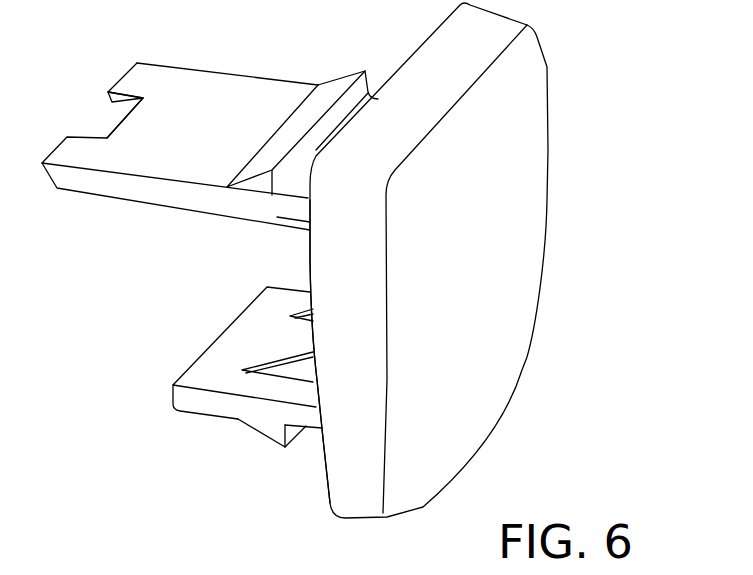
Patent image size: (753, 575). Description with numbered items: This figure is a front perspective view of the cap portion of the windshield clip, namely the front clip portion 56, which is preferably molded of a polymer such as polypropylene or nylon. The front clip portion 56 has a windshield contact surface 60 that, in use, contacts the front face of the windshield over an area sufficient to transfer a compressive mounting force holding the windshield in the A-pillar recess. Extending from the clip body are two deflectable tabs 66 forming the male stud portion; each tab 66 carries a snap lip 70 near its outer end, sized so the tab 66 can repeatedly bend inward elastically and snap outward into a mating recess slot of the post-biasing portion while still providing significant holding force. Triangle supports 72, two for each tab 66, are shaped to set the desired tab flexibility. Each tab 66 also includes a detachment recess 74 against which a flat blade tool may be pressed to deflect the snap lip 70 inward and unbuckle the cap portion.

The front clip portion 56 is at (587, 54).
The windshield contact surface 60 is at (307, 242).
The deflectable tab 66 is at (202, 93).
The snap lip 70 is at (323, 100).
The triangle support 72 is at (287, 367).
The detachment recess 74 is at (108, 124).